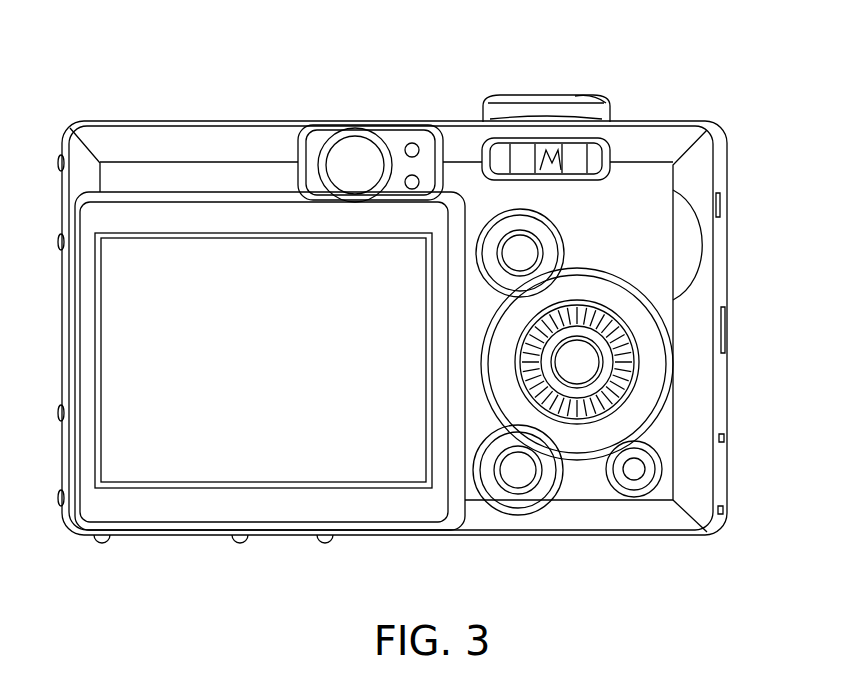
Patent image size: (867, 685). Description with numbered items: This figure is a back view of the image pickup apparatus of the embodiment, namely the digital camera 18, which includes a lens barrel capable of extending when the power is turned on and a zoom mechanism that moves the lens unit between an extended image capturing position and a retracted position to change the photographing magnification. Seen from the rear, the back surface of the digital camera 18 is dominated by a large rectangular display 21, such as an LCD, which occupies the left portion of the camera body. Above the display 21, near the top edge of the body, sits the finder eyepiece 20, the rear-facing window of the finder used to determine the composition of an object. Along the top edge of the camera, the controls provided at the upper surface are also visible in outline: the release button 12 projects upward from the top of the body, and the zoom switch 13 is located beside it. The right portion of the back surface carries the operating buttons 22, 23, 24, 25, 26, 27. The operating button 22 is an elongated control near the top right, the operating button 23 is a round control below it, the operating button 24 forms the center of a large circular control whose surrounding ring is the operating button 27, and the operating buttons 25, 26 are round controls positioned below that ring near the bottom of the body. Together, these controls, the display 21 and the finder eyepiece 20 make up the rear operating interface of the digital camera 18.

The release button 12 is at (546, 95).
The zoom switch 13 is at (596, 100).
The digital camera 18 is at (186, 138).
The finder eyepiece 20 is at (352, 150).
The display 21 is at (338, 470).
The operating button 22 is at (592, 136).
The operating button 23 is at (525, 243).
The operating button 24 is at (580, 367).
The operating button 25 is at (517, 473).
The operating button 26 is at (633, 472).
The operating button 27 is at (637, 385).